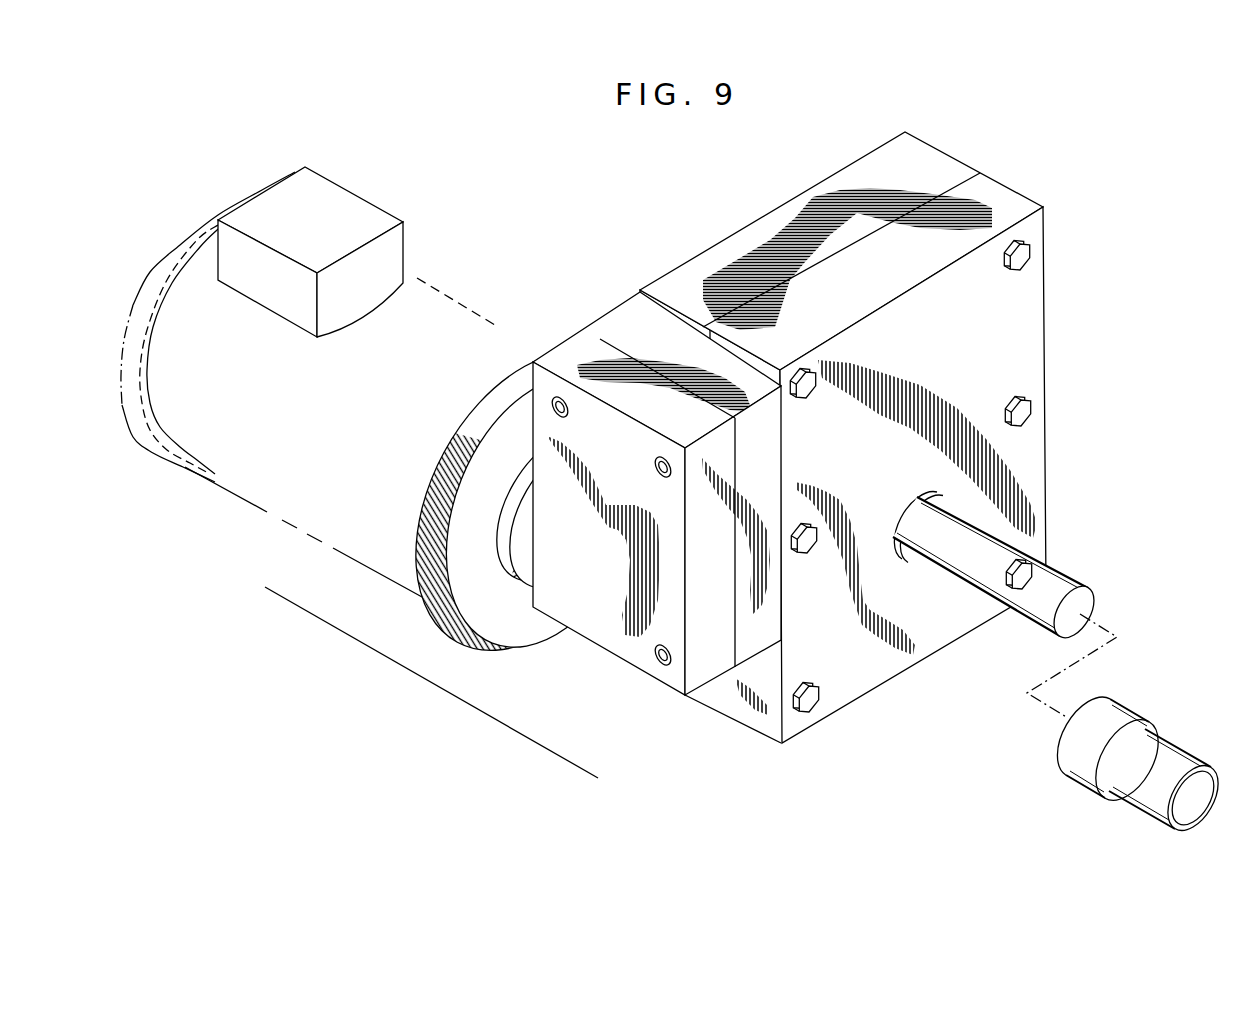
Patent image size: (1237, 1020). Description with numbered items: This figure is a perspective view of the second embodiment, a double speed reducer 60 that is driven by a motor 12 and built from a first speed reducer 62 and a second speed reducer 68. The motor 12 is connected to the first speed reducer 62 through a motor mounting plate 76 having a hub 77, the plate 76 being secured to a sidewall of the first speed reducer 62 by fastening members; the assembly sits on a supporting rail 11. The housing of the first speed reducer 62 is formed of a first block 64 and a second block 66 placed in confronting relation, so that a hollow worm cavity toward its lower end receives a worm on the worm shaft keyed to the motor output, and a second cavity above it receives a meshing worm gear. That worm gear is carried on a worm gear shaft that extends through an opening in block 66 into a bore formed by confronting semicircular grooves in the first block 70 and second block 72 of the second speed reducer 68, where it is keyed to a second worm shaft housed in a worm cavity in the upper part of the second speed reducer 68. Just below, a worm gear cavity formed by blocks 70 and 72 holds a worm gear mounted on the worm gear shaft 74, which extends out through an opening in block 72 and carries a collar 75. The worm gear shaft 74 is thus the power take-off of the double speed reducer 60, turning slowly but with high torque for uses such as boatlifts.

The mounting frame rail 11 is at (300, 610).
The motor 12 is at (417, 274).
The double speed reducer 60 is at (805, 379).
The first speed reducer 62 is at (617, 460).
The first block 64 is at (563, 336).
The second block 66 is at (672, 488).
The second speed reducer 68 is at (880, 418).
The first block 70 is at (903, 158).
The second block 72 is at (1005, 205).
The worm gear shaft 74 is at (1052, 577).
The collar 75 is at (1127, 720).
The motor mounting plate 76 is at (477, 437).
The hub 77 is at (522, 594).